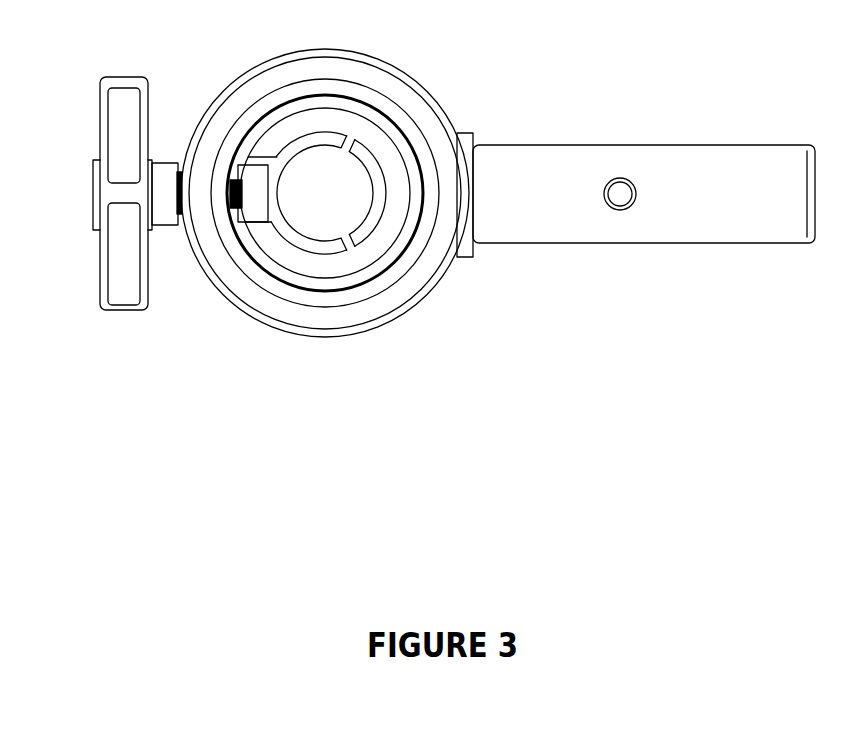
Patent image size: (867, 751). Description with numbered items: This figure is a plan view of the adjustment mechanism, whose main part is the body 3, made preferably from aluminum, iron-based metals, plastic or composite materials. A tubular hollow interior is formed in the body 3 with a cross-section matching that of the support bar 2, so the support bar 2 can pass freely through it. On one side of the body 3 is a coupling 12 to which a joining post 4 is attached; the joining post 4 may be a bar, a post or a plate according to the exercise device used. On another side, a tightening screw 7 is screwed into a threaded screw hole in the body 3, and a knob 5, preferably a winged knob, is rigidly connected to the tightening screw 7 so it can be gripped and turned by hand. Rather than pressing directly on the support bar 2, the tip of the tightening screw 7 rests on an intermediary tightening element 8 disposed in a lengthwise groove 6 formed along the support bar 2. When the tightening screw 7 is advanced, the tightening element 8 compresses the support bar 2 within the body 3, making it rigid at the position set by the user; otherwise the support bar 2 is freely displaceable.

The support bar 2 is at (339, 280).
The body 3 is at (338, 75).
The joining post 4 is at (560, 205).
The knob 5 is at (123, 245).
The groove 6 is at (233, 225).
The tightening screw 7 is at (178, 165).
The tightening element 8 is at (232, 223).
The coupling 12 is at (472, 245).